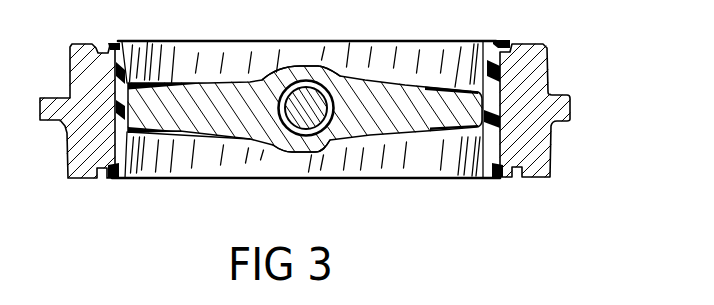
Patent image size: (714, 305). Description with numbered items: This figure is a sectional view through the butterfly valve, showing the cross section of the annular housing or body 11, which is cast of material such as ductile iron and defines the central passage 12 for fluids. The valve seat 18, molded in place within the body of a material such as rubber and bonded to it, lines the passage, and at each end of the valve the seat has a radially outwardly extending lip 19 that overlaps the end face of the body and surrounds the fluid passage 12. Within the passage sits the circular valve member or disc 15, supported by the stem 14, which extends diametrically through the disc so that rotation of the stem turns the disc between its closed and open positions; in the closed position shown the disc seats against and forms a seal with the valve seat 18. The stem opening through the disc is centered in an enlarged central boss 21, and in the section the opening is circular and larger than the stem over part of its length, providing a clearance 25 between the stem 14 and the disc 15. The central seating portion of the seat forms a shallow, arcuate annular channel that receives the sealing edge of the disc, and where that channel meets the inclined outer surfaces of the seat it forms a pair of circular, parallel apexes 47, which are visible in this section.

The housing or body 11 is at (552, 67).
The central passage 12 is at (430, 138).
The stem 14 is at (303, 118).
The valve member or disc 15 is at (208, 135).
The valve seat 18 is at (485, 150).
The lip 19 is at (101, 180).
The central boss 21 is at (326, 148).
The clearance 25 is at (321, 81).
The apexes 47 is at (471, 88).